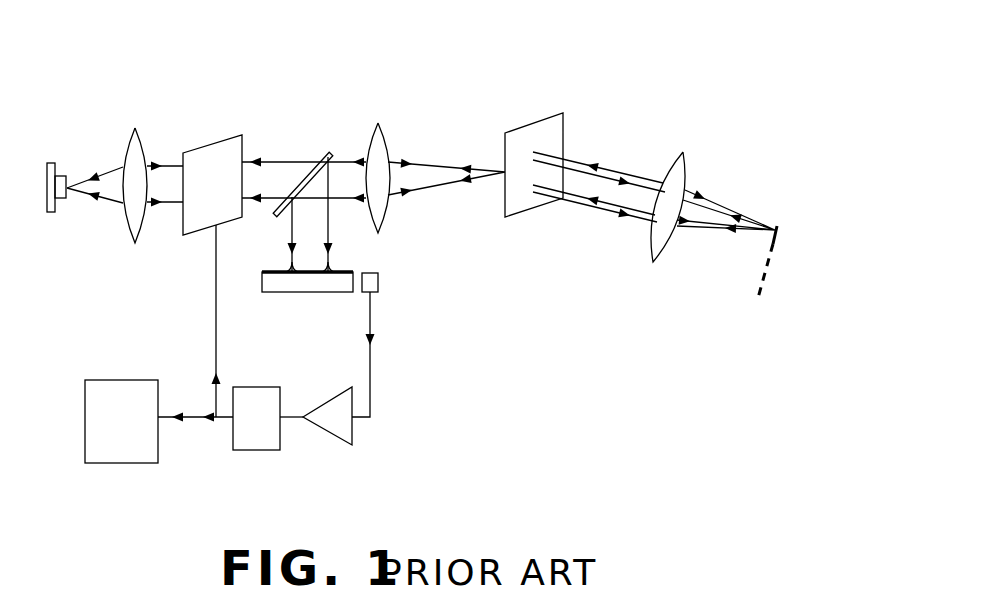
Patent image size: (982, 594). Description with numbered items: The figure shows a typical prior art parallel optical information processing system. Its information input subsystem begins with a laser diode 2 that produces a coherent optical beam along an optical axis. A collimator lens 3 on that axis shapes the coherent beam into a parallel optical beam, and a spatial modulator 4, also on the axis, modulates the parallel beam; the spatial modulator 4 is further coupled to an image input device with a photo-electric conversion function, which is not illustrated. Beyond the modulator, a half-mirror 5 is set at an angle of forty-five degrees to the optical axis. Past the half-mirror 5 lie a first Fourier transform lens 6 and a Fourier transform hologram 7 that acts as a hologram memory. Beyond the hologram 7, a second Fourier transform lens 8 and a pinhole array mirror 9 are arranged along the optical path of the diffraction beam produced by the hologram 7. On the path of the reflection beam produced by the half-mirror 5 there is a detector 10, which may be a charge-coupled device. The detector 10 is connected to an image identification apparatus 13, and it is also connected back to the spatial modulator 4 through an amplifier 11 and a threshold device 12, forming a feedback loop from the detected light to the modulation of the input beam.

The laser diode 2 is at (48, 162).
The collimator lens 3 is at (132, 128).
The spatial modulator 4 is at (215, 157).
The half-mirror 5 is at (322, 155).
The first Fourier transform lens 6 is at (385, 124).
The Fourier transform hologram 7 is at (535, 135).
The second Fourier transform lens 8 is at (672, 163).
The pinhole array mirror 9 is at (775, 226).
The detector 10 is at (358, 270).
The amplifier 11 is at (335, 445).
The threshold device 12 is at (266, 450).
The image identification apparatus 13 is at (132, 463).